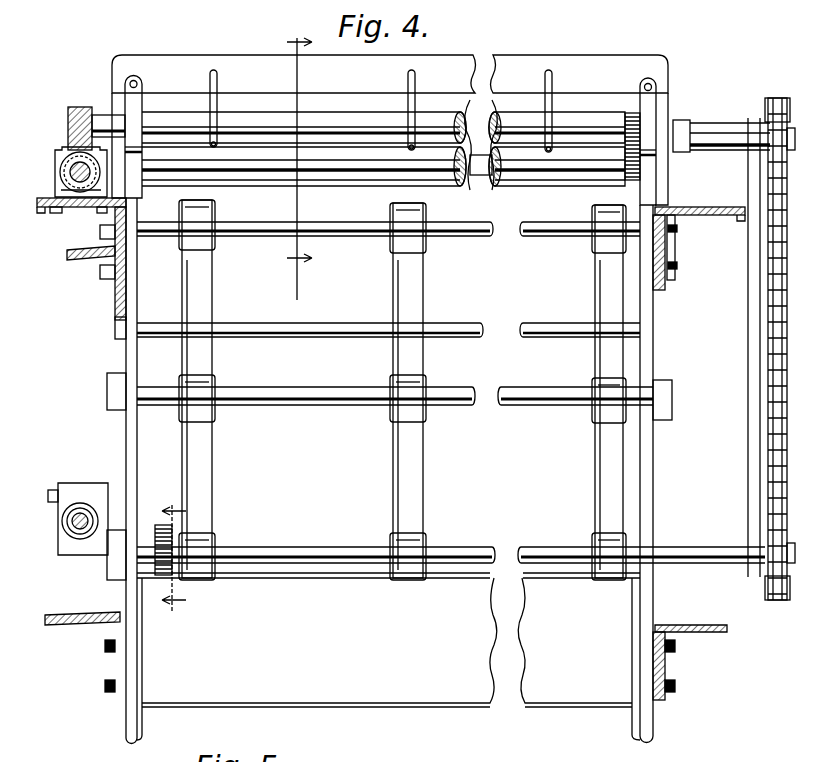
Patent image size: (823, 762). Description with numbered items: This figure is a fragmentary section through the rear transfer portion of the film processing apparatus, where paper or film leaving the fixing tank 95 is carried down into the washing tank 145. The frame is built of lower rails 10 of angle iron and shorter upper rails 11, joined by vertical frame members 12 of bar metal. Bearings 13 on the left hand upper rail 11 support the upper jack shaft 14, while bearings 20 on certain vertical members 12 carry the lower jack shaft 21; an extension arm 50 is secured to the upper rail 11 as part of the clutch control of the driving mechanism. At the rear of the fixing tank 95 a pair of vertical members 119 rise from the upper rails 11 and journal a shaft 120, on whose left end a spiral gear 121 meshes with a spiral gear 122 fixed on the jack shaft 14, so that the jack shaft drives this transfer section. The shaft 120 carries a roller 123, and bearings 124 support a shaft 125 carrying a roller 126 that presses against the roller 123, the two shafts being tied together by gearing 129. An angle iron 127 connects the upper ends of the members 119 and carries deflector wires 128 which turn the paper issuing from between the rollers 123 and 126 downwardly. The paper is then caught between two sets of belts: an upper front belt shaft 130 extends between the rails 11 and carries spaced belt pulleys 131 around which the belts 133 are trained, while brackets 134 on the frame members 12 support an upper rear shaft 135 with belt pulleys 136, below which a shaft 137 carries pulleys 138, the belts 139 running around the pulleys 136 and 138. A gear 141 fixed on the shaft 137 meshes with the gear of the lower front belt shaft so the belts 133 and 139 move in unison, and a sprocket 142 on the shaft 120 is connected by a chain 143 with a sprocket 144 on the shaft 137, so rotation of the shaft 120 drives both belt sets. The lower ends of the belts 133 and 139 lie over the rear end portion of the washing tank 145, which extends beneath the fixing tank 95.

The lower rails 10 is at (95, 620).
The upper rails 11 is at (90, 207).
The vertical frame members 12 is at (666, 484).
The bearings 13 is at (56, 152).
The upper jack shaft 14 is at (71, 171).
The bearings 20 is at (64, 483).
The lower jack shaft 21 is at (60, 520).
The extension arm 50 is at (80, 255).
The fixing tank 95 is at (115, 289).
The vertical members 119 is at (113, 101).
The shaft 120 is at (744, 147).
The spiral gear 121 is at (68, 110).
The spiral gear 122 is at (56, 188).
The roller 123 is at (342, 125).
The bearings 124 is at (144, 97).
The shaft 125 is at (478, 178).
The roller 126 is at (382, 160).
The angle iron 127 is at (200, 44).
The deflector wires 128 is at (218, 90).
The gearing 129 is at (625, 156).
The upper front belt shaft 130 is at (380, 235).
The belt pulleys 131 is at (215, 242).
The belts 133 is at (212, 288).
The brackets 134 is at (107, 387).
The upper rear shaft 135 is at (290, 400).
The belt pulleys 136 is at (427, 412).
The shaft 137 is at (353, 566).
The pulleys 138 is at (215, 550).
The belts 139 is at (424, 506).
The gear 141 is at (172, 578).
The sprocket 142 is at (764, 112).
The chain 143 is at (768, 316).
The sprocket 144 is at (764, 578).
The washing tank 145 is at (455, 700).